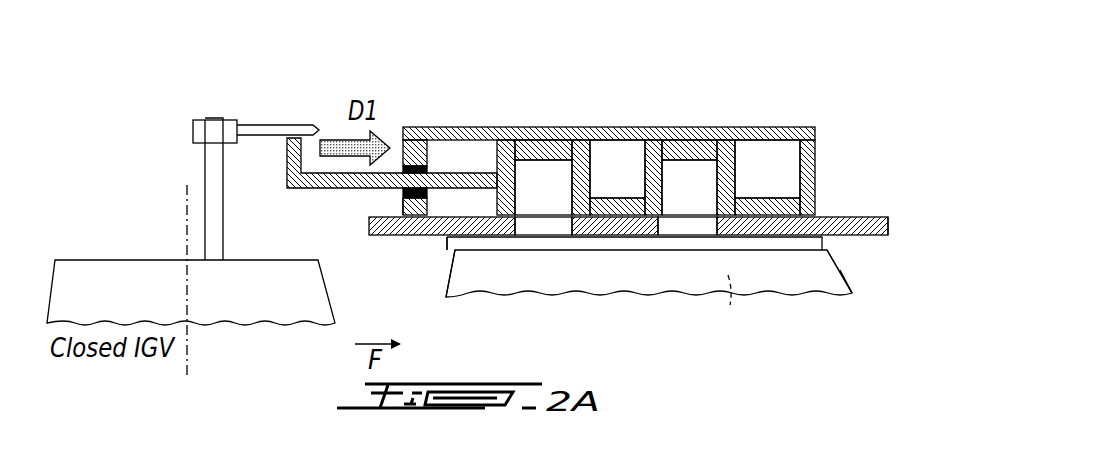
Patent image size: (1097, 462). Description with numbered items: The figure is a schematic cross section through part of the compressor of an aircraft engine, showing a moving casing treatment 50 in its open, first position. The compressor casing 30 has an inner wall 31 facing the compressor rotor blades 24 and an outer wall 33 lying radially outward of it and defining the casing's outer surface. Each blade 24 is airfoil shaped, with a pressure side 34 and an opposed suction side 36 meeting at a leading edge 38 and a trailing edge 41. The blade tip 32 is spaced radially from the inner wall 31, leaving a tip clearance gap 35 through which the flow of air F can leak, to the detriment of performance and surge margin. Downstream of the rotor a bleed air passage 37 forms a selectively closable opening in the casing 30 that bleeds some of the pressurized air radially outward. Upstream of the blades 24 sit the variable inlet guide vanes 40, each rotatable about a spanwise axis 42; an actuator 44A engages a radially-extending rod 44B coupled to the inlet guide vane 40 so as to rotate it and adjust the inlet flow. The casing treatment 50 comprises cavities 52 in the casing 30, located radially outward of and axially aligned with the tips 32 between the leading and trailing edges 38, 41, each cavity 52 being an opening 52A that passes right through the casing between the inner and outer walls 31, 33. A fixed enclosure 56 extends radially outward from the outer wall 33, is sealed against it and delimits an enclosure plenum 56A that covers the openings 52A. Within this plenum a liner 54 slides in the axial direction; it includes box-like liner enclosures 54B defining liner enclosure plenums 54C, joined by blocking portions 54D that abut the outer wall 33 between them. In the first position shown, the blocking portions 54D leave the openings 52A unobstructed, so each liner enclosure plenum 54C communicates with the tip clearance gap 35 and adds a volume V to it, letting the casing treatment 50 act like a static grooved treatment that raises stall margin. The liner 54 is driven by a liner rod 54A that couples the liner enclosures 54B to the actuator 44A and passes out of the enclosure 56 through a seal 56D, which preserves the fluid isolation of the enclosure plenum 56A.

The compressor rotor blades 24 is at (790, 272).
The compressor casing 30 is at (892, 236).
The inner wall 31 is at (385, 237).
The tip 32 is at (822, 250).
The outer wall 33 is at (402, 200).
The pressure side 34 is at (820, 280).
The tip clearance gap 35 is at (445, 238).
The suction side 36 is at (731, 306).
The bleed air passage 37 is at (847, 248).
The leading edge 38 is at (447, 283).
The inlet guide vanes 40 is at (82, 250).
The trailing edge 41 is at (843, 272).
The spanwise axis 42 is at (187, 196).
The actuator 44A is at (260, 125).
The rod 44B is at (205, 160).
The casing treatment 50 is at (815, 118).
The cavities 52 is at (557, 238).
The opening 52A is at (530, 226).
The liner 54 is at (490, 155).
The liner rod 54A is at (330, 178).
The liner enclosures 54B is at (533, 150).
The liner enclosure plenums 54C is at (552, 182).
The blocking portions 54D is at (773, 210).
The enclosure 56 is at (728, 165).
The enclosure plenum 56A is at (676, 164).
The seal 56D is at (427, 166).